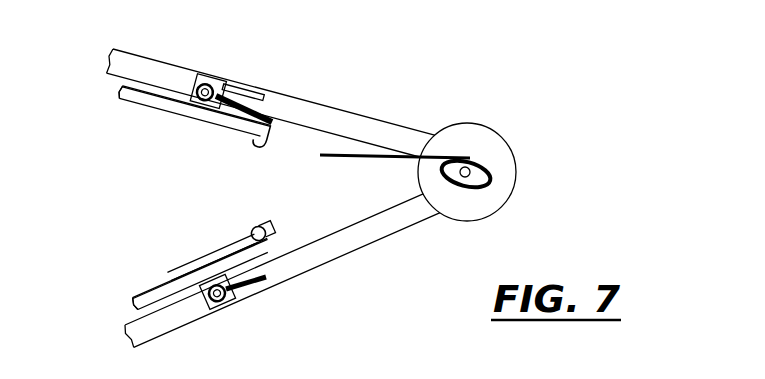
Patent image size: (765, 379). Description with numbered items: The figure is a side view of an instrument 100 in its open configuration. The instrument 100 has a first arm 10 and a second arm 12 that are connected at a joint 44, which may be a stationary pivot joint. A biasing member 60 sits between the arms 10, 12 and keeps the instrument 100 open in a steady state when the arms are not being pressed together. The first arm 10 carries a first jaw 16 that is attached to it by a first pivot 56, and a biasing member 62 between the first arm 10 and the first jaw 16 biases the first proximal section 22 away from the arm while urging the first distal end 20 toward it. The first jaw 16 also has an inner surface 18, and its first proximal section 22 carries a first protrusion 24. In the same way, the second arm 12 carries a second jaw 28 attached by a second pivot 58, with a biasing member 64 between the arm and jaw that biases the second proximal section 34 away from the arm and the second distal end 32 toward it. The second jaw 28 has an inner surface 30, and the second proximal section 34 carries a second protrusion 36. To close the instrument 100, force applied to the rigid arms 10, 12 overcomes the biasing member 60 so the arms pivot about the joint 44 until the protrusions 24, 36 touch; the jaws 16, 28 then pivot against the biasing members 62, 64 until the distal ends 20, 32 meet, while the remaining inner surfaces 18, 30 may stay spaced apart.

The first arm 10 is at (325, 107).
The second arm 12 is at (347, 255).
The first jaw 16 is at (182, 113).
The inner surface 18 is at (182, 113).
The first distal end 20 is at (130, 101).
The first proximal section 22 is at (238, 125).
The first protrusion 24 is at (265, 147).
The second jaw 28 is at (195, 275).
The inner surface 30 is at (195, 275).
The second distal end 32 is at (138, 298).
The second proximal section 34 is at (245, 255).
The second protrusion 36 is at (267, 229).
The joint 44 is at (468, 164).
The first pivot 56 is at (197, 78).
The second pivot 58 is at (227, 303).
The biasing member 60 is at (390, 158).
The biasing member 62 is at (241, 84).
The biasing member 64 is at (258, 290).
The instrument 100 is at (440, 83).